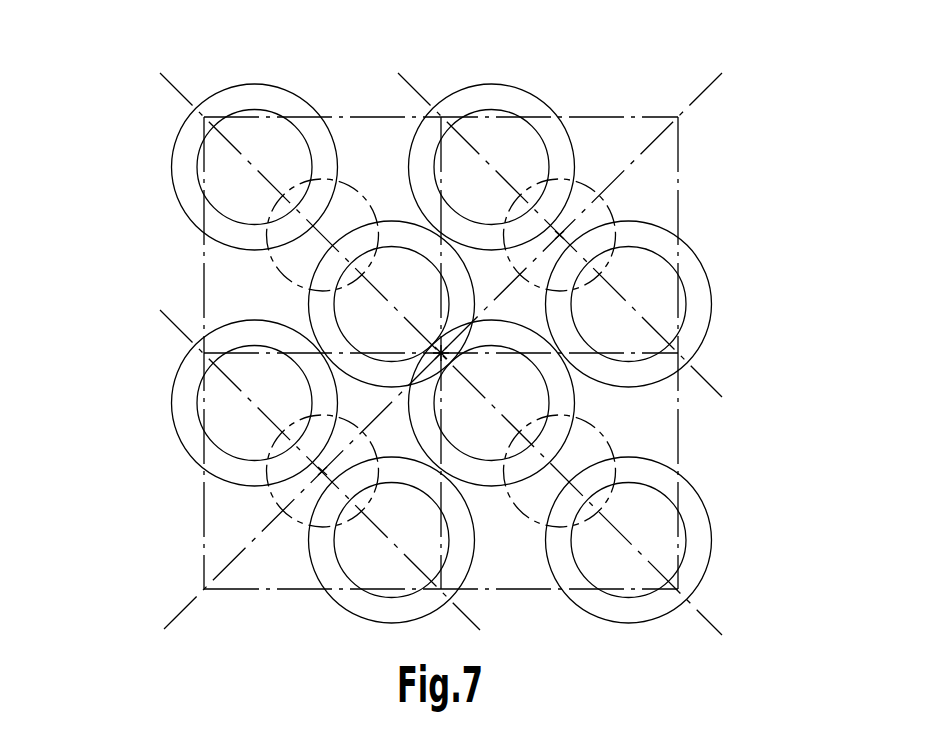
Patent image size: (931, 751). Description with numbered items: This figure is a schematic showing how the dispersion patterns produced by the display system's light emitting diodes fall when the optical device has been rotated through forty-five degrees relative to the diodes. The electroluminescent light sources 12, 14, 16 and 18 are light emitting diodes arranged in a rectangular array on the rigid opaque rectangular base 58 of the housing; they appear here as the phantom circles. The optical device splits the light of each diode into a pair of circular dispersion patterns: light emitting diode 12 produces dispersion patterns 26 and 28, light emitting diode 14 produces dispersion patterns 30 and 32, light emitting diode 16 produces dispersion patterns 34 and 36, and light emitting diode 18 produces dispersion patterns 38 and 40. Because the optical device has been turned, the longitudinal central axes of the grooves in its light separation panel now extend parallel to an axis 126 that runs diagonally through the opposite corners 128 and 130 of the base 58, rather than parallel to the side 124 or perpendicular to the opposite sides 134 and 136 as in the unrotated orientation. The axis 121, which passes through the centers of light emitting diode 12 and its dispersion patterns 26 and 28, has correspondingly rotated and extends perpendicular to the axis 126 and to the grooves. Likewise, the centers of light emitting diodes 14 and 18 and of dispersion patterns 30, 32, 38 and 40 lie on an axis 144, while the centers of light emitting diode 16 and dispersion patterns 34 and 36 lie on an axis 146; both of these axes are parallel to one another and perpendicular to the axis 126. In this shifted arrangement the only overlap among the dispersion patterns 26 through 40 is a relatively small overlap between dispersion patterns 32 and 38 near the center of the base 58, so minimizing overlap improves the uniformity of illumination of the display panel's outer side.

The electroluminescent light source 12 is at (292, 522).
The electroluminescent light source 14 is at (362, 192).
The electroluminescent light source 16 is at (590, 188).
The electroluminescent light source 18 is at (515, 498).
The dispersion pattern 26 is at (182, 417).
The dispersion pattern 28 is at (358, 615).
The dispersion pattern 30 is at (182, 173).
The dispersion pattern 32 is at (312, 312).
The dispersion pattern 34 is at (508, 95).
The dispersion pattern 36 is at (698, 290).
The dispersion pattern 38 is at (563, 395).
The dispersion pattern 40 is at (697, 543).
The base 58 is at (700, 211).
The axis 121 is at (176, 333).
The side 124 is at (203, 503).
The axis 126 is at (177, 617).
The corner 128 is at (203, 587).
The corner 130 is at (680, 118).
The side 134 is at (498, 590).
The side 136 is at (340, 115).
The axis 144 is at (176, 94).
The axis 146 is at (417, 93).